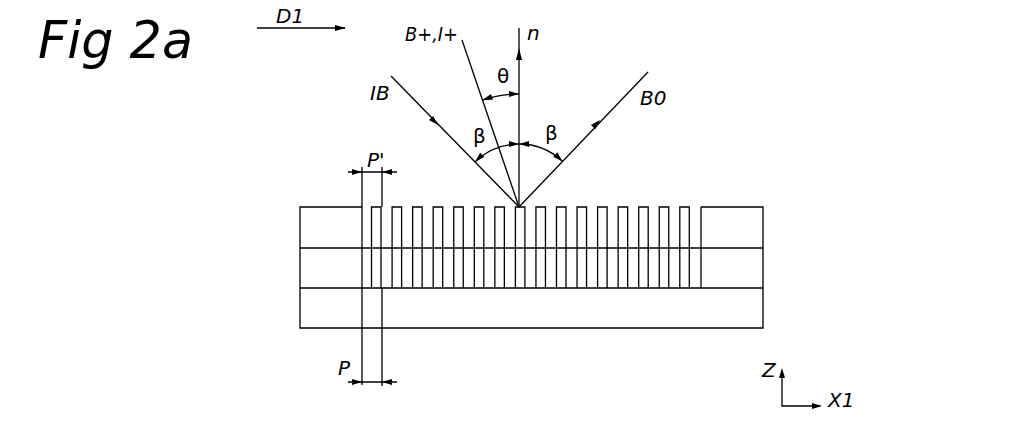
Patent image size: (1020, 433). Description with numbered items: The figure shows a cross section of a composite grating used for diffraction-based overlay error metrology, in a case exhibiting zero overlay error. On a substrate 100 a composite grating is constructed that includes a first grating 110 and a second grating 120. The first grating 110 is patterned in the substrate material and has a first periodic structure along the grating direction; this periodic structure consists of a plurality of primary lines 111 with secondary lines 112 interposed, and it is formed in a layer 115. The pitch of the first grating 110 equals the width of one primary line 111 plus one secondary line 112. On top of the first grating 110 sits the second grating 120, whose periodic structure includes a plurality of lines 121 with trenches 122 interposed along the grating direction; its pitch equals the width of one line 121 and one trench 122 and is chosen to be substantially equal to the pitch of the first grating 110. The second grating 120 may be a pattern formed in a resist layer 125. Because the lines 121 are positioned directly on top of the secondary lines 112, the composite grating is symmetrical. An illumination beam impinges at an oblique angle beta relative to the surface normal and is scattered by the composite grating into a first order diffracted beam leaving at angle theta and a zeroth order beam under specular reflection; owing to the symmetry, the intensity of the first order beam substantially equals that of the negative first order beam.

The substrate 100 is at (735, 311).
The first grating 110 is at (587, 295).
The primary lines 111 is at (367, 275).
The secondary lines 112 is at (378, 263).
The layer 115 is at (740, 268).
The second grating 120 is at (608, 198).
The lines 121 is at (378, 220).
The trenches 122 is at (367, 222).
The resist layer 125 is at (740, 223).